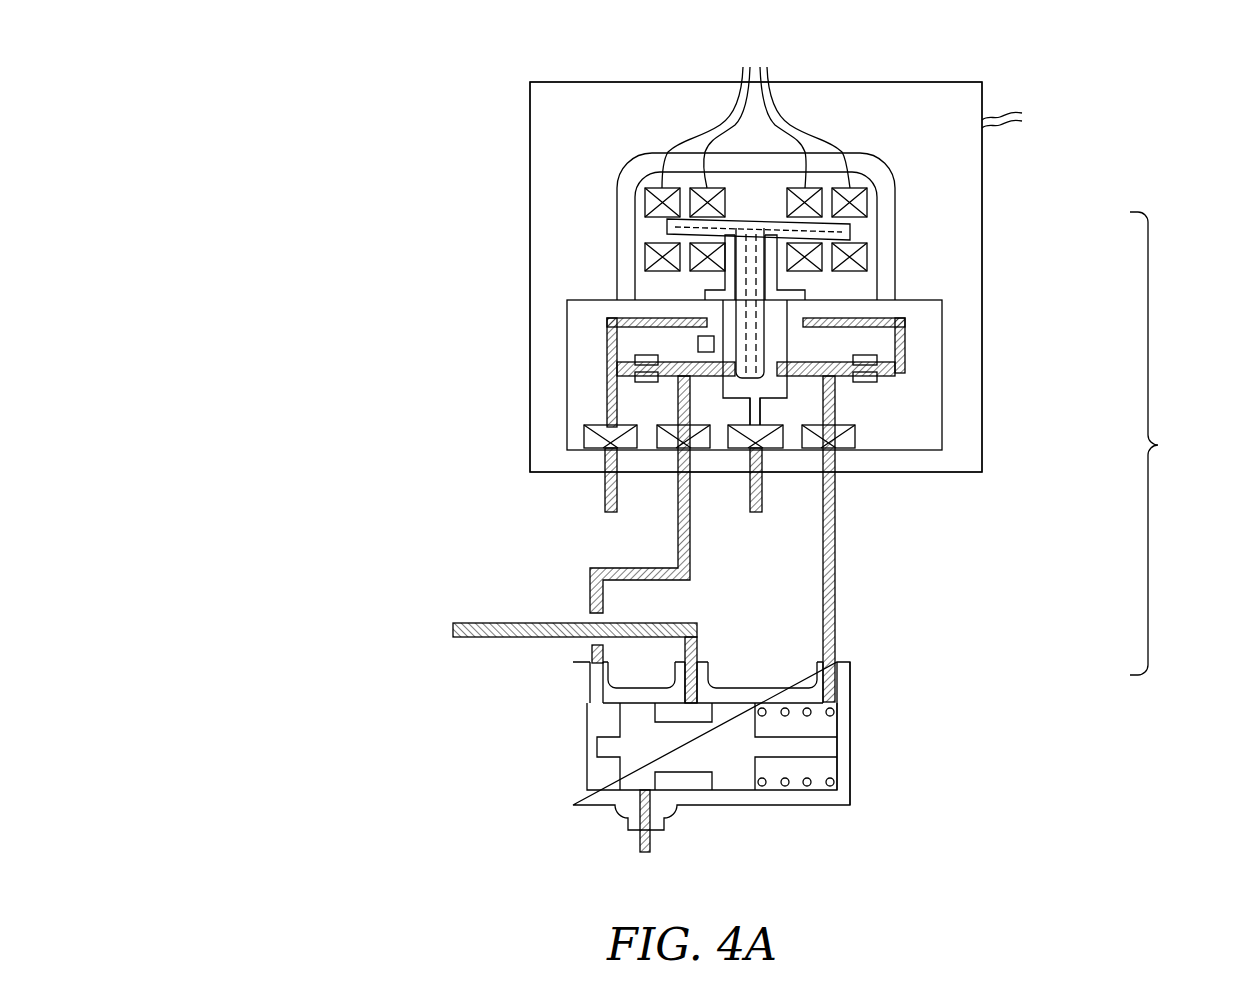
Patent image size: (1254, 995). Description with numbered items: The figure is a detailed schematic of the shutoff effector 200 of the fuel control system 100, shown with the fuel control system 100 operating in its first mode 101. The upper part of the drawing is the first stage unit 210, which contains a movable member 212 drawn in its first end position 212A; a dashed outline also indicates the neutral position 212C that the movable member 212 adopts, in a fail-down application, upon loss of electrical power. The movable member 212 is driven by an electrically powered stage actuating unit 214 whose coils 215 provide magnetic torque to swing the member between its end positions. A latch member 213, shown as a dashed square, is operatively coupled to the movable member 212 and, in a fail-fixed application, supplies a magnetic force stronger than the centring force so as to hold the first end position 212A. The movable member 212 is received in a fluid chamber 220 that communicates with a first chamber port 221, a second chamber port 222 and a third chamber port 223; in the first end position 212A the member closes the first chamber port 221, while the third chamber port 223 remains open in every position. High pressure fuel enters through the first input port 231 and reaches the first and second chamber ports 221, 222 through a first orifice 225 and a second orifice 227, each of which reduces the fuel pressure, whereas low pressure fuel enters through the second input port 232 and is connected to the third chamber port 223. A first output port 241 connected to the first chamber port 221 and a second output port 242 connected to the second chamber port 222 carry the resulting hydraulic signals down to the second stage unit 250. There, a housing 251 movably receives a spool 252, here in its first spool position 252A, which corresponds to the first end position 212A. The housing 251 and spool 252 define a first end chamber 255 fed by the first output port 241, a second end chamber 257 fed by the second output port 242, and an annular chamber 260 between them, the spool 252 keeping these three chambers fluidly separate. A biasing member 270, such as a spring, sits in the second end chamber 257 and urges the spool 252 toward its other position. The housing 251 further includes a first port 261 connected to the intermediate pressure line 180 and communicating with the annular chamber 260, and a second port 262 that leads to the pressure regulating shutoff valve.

The fuel control system 100 is at (559, 257).
The first mode 101 is at (256, 81).
The intermediate pressure line 180 is at (495, 623).
The shutoff effector 200 is at (1168, 443).
The first stage unit 210 is at (1040, 232).
The movable member 212 is at (772, 273).
The first end position 212A is at (734, 326).
The neutral position 212C is at (786, 340).
The latch member 213 is at (701, 336).
The stage actuating unit 214 is at (626, 163).
The coils 215 is at (756, 114).
The fluid chamber 220 is at (800, 323).
The first chamber port 221 is at (672, 358).
The second chamber port 222 is at (770, 333).
The third chamber port 223 is at (755, 405).
The first orifice 225 is at (650, 378).
The second orifice 227 is at (868, 384).
The first input port 231 is at (592, 441).
The second input port 232 is at (768, 452).
The first output port 241 is at (675, 450).
The second output port 242 is at (855, 442).
The second stage unit 250 is at (802, 720).
The housing 251 is at (845, 737).
The spool 252 is at (721, 832).
The first spool position 252A is at (728, 775).
The first end chamber 255 is at (598, 772).
The second end chamber 257 is at (830, 768).
The annular chamber 260 is at (672, 712).
The first port 261 is at (712, 690).
The second port 262 is at (618, 821).
The biasing member 270 is at (784, 787).